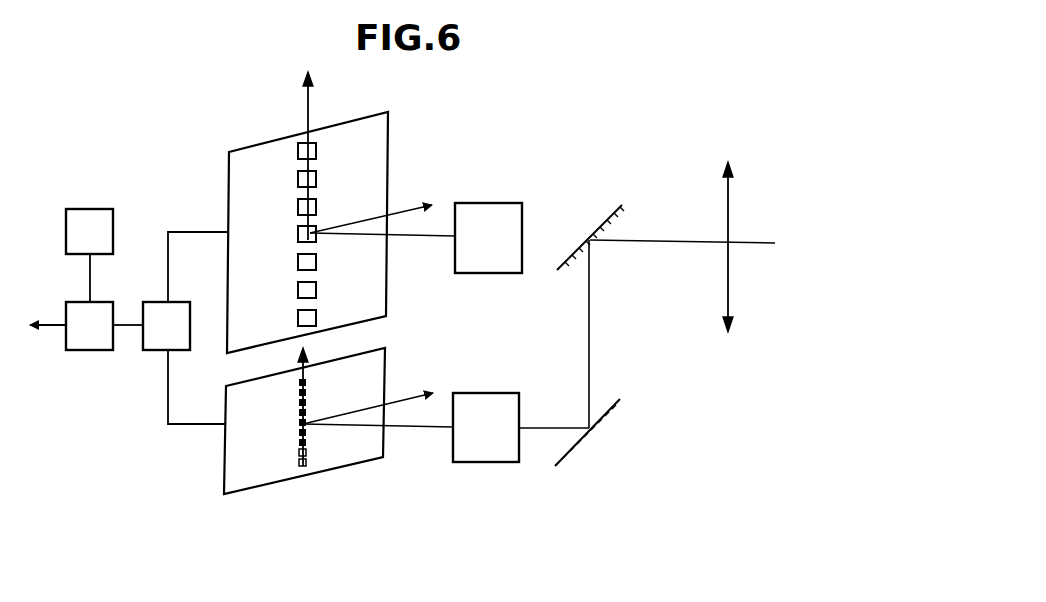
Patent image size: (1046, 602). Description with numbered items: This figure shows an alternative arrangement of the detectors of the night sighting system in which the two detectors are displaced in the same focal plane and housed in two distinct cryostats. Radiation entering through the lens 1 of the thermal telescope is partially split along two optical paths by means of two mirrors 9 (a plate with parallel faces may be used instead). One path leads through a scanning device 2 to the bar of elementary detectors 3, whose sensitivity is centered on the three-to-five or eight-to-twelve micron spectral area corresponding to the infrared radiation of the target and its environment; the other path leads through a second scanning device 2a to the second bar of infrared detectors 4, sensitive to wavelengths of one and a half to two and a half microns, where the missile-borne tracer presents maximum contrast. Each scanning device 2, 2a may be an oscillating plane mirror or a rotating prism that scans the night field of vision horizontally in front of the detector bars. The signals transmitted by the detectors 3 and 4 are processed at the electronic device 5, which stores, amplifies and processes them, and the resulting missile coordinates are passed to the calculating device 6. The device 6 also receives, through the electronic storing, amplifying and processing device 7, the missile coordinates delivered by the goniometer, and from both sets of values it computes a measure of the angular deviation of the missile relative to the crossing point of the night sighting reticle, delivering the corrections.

The lens 1 is at (732, 192).
The scanning device 2 is at (490, 212).
The second scanning device 2a is at (485, 458).
The bar of elementary detectors 3 is at (305, 148).
The second bar of infrared detectors 4 is at (299, 458).
The electronic device 5 is at (154, 343).
The calculating device 6 is at (79, 344).
The electronic storing, amplifying and processing device 7 is at (81, 216).
The mirrors 9 is at (597, 228).